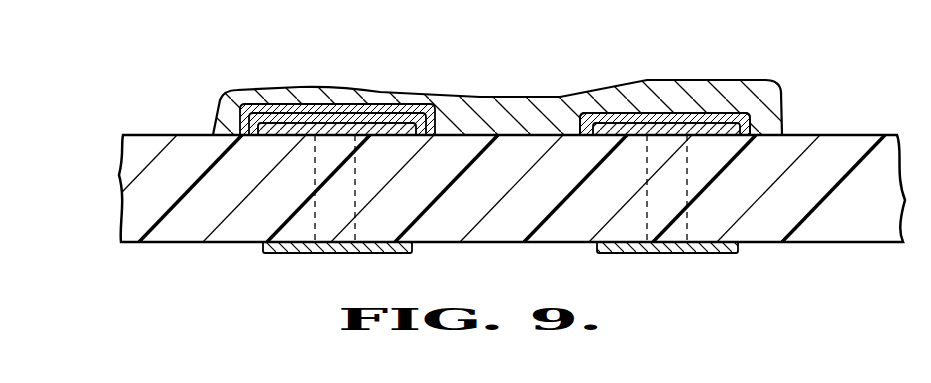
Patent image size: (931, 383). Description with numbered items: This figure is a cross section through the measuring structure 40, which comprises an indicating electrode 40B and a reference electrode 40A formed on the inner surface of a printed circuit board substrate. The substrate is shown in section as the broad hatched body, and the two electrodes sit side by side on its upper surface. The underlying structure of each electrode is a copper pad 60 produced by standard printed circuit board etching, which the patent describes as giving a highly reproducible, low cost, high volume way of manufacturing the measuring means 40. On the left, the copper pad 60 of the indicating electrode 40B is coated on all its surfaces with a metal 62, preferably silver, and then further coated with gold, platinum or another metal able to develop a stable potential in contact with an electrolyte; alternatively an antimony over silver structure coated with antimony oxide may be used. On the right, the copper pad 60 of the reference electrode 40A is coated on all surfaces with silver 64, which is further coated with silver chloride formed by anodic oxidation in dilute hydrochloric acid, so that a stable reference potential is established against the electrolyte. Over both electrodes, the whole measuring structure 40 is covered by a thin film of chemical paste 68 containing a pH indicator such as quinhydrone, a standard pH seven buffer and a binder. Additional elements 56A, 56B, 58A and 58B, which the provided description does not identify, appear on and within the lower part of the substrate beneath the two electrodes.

The measuring structure 40 is at (489, 155).
The reference electrode 40A is at (675, 115).
The indicating electrode 40B is at (319, 103).
The first external contact pad 56A is at (728, 254).
The second external contact pad 56B is at (398, 254).
The first conductive via 58A is at (683, 222).
The second conductive via 58B is at (313, 218).
The copper pad 60 is at (270, 128).
The metal coating 62 is at (375, 108).
The silver coating 64 is at (333, 117).
The chemical paste 68 is at (397, 95).